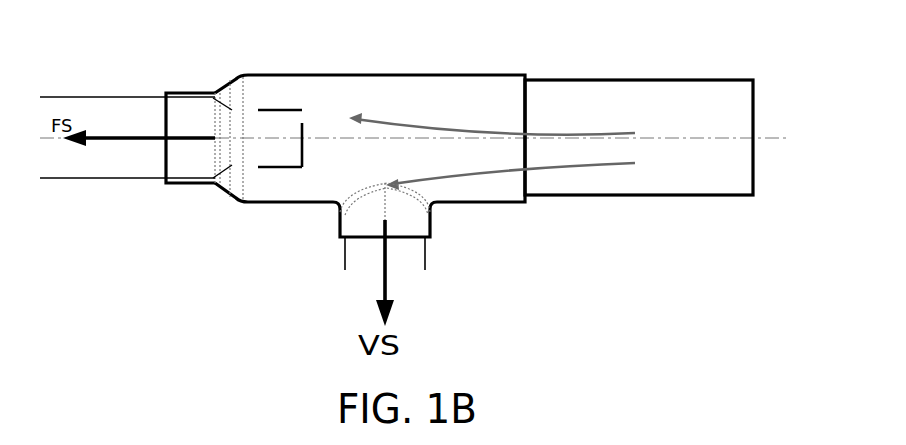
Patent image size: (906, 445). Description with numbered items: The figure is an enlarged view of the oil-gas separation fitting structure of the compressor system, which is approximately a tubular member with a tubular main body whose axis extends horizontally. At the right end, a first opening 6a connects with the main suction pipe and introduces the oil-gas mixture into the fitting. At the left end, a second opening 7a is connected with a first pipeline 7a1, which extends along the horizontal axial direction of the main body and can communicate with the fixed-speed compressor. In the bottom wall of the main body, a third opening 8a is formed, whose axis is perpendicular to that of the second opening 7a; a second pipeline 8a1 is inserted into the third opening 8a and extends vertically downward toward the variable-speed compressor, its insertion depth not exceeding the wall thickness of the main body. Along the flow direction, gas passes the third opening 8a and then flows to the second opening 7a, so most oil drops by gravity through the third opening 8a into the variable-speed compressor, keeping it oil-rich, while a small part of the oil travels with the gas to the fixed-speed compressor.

The first opening 6a is at (518, 120).
The second opening 7a is at (232, 98).
The first pipeline 7a1 is at (207, 183).
The third opening 8a is at (433, 210).
The second pipeline 8a1 is at (338, 217).